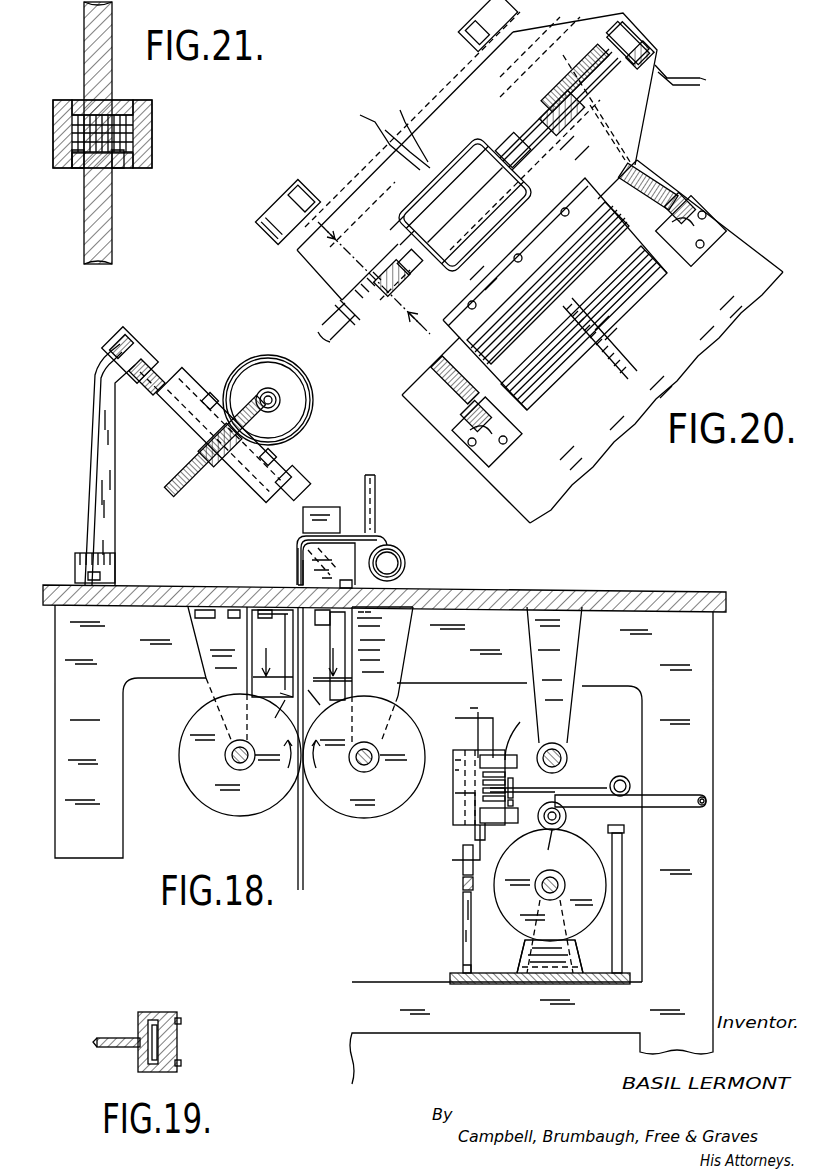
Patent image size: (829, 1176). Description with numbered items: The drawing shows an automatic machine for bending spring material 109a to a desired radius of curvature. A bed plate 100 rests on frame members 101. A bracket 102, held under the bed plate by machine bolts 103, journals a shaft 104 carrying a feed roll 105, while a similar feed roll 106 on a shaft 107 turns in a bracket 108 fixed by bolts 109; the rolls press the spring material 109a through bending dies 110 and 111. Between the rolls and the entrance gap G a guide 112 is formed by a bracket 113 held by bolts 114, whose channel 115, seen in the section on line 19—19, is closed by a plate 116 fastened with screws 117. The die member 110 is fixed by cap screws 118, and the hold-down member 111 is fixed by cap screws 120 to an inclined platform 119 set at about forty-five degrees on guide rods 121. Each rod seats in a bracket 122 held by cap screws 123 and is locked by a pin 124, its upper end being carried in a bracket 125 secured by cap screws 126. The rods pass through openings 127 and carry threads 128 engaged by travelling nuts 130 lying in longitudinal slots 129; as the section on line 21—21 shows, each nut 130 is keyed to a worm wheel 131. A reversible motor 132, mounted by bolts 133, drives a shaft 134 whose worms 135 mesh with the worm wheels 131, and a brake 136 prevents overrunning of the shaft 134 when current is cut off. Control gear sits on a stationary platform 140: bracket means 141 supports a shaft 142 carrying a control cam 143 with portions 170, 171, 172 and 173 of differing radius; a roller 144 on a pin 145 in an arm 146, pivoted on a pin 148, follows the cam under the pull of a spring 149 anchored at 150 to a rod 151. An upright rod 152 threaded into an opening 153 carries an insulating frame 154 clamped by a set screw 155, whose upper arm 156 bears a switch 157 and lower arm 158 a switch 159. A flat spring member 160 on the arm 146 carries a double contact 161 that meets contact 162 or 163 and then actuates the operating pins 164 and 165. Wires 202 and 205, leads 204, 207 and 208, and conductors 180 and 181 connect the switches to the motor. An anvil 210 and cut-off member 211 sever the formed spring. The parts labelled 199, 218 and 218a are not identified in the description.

In FIG. 20, the bed plate 100 is at (775, 262).
In FIG. 18, the bed plate 100 is at (636, 592).
In FIG. 18, the frame members 101 is at (713, 717).
In FIG. 18, the bracket 102 is at (405, 648).
In FIG. 18, the machine bolts 103 is at (395, 612).
In FIG. 18, the shaft 104 is at (364, 772).
In FIG. 18, the feed roll 105 is at (364, 818).
In FIG. 18, the feed roll 106 is at (190, 800).
In FIG. 18, the shaft 107 is at (232, 763).
In FIG. 18, the bracket 108 is at (203, 652).
In FIG. 18, the bolts 109 is at (212, 620).
In FIG. 20, the spring material 109a is at (605, 360).
In FIG. 18, the spring material 109a is at (303, 870).
In FIG. 19, the spring material 109a is at (152, 1050).
In FIG. 20, the die member 110 is at (640, 297).
In FIG. 18, the die member 110 is at (345, 536).
In FIG. 20, the hold-down member 111 is at (622, 238).
In FIG. 18, the hold-down member 111 is at (327, 507).
In FIG. 18, the guide 112 is at (280, 693).
In FIG. 19, the guide 112 is at (92, 1042).
In FIG. 19, the bracket 113 is at (105, 1038).
In FIG. 18, the bolts 114 is at (298, 575).
In FIG. 18, the channel 115 is at (300, 640).
In FIG. 19, the channel 115 is at (150, 1030).
In FIG. 18, the plate 116 is at (345, 690).
In FIG. 19, the plate 116 is at (177, 1040).
In FIG. 18, the screws 117 is at (320, 705).
In FIG. 19, the screws 117 is at (181, 1021).
In FIG. 18, the cap screws 118 is at (322, 625).
In FIG. 18, the section line 19— 19 is at (302, 663).
In FIG. 20, the inclined platform 119 is at (643, 113).
In FIG. 18, the inclined platform 119 is at (165, 425).
In FIG. 20, the cap screws 120 is at (563, 208).
In FIG. 18, the cap screws 120 is at (304, 470).
In FIG. 20, the guide rods 121 is at (468, 40).
In FIG. 18, the guide rods 121 is at (112, 342).
In FIG. 20, the bracket 122 is at (720, 222).
In FIG. 18, the bracket 122 is at (303, 560).
In FIG. 20, the cap screws 123 is at (706, 207).
In FIG. 18, the cap screws 123 is at (352, 584).
In FIG. 20, the pin 124 is at (690, 198).
In FIG. 18, the pin 124 is at (308, 550).
In FIG. 20, the bracket 125 is at (335, 272).
In FIG. 18, the bracket 125 is at (85, 500).
In FIG. 18, the cap screws 126 is at (75, 570).
In FIG. 21, the opening 127 is at (152, 118).
In FIG. 20, the opening 127 is at (622, 140).
In FIG. 18, the opening 127 is at (181, 382).
In FIG. 21, the threads 128 is at (152, 140).
In FIG. 20, the threads 128 is at (658, 164).
In FIG. 18, the threads 128 is at (140, 385).
In FIG. 21, the longitudinal slots 129 is at (75, 168).
In FIG. 20, the longitudinal slots 129 is at (604, 48).
In FIG. 21, the travelling nut 130 is at (118, 168).
In FIG. 20, the travelling nut 130 is at (583, 97).
In FIG. 18, the travelling nut 130 is at (222, 467).
In FIG. 21, the worm wheel 131 is at (112, 238).
In FIG. 20, the worm wheel 131 is at (600, 50).
In FIG. 18, the worm wheel 131 is at (175, 487).
In FIG. 20, the electric motor 132 is at (478, 140).
In FIG. 18, the electric motor 132 is at (310, 412).
In FIG. 18, the bolts 133 is at (212, 395).
In FIG. 20, the shaft 134 is at (640, 30).
In FIG. 20, the worm 135 is at (573, 112).
In FIG. 18, the worm 135 is at (268, 388).
In FIG. 20, the brake 136 is at (652, 47).
In FIG. 18, the stationary platform 140 is at (520, 984).
In FIG. 18, the bracket means 141 is at (527, 958).
In FIG. 18, the shaft 142 is at (565, 882).
In FIG. 18, the control cam 143 is at (533, 948).
In FIG. 18, the roller 144 is at (566, 812).
In FIG. 18, the pin 145 is at (556, 818).
In FIG. 18, the arm 146 is at (668, 795).
In FIG. 18, the pin 148 is at (706, 801).
In FIG. 18, the spring 149 is at (620, 776).
In FIG. 18, the securing point 150 is at (624, 830).
In FIG. 18, the rod 151 is at (622, 912).
In FIG. 18, the upright rod 152 is at (463, 930).
In FIG. 18, the threaded opening 153 is at (467, 984).
In FIG. 18, the frame member 154 is at (453, 760).
In FIG. 18, the set screw 155 is at (483, 790).
In FIG. 18, the upper arm 156 is at (476, 723).
In FIG. 18, the micro switch 157 is at (510, 755).
In FIG. 18, the lower arm 158 is at (453, 818).
In FIG. 18, the micro switch 159 is at (508, 823).
In FIG. 18, the flat spring member 160 is at (587, 778).
In FIG. 18, the double contact 161 is at (483, 782).
In FIG. 18, the contact 162 is at (483, 774).
In FIG. 18, the contact 163 is at (483, 798).
In FIG. 18, the operating pin 164 is at (513, 780).
In FIG. 18, the sensitive pin 165 is at (513, 803).
In FIG. 18, the cam portion 170 is at (520, 916).
In FIG. 18, the cam portion 171 is at (580, 930).
In FIG. 18, the cam portion 172 is at (546, 843).
In FIG. 18, the cam portion 173 is at (543, 956).
In FIG. 20, the conductor 180 is at (698, 87).
In FIG. 20, the conductor 181 is at (385, 143).
In FIG. 20, the lead wire 199 is at (702, 68).
In FIG. 20, the wire 202 is at (410, 125).
In FIG. 18, the lead 204 is at (455, 731).
In FIG. 20, the wire 205 is at (378, 132).
In FIG. 18, the wire 205 is at (513, 731).
In FIG. 18, the lead 207 is at (451, 850).
In FIG. 18, the lead 208 is at (463, 883).
In FIG. 18, the anvil 210 is at (393, 545).
In FIG. 18, the cut-off member 211 is at (378, 482).
In FIG. 18, the pivot 218 is at (552, 743).
In FIG. 18, the pivot arm 218a is at (580, 652).
In FIG. 20, the section line 21— 21 is at (374, 278).
In FIG. 18, the entrance gap G is at (298, 578).